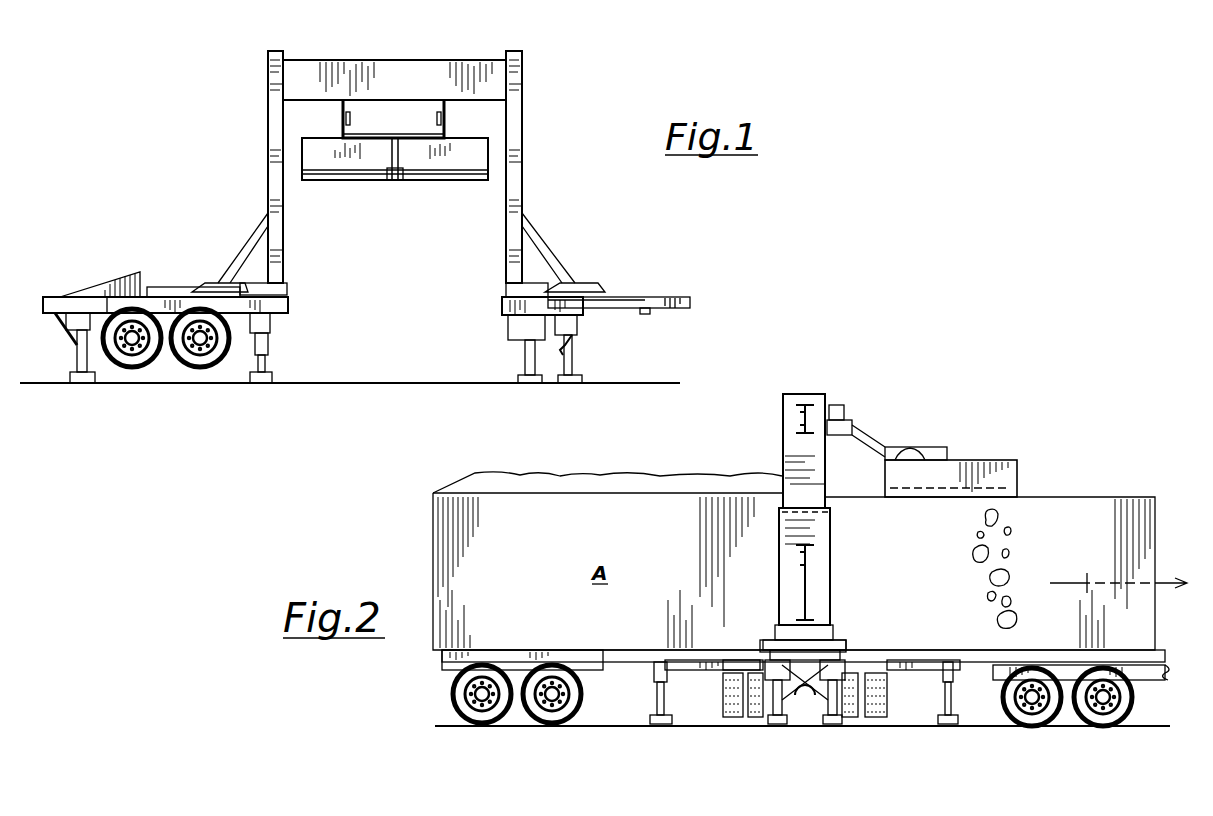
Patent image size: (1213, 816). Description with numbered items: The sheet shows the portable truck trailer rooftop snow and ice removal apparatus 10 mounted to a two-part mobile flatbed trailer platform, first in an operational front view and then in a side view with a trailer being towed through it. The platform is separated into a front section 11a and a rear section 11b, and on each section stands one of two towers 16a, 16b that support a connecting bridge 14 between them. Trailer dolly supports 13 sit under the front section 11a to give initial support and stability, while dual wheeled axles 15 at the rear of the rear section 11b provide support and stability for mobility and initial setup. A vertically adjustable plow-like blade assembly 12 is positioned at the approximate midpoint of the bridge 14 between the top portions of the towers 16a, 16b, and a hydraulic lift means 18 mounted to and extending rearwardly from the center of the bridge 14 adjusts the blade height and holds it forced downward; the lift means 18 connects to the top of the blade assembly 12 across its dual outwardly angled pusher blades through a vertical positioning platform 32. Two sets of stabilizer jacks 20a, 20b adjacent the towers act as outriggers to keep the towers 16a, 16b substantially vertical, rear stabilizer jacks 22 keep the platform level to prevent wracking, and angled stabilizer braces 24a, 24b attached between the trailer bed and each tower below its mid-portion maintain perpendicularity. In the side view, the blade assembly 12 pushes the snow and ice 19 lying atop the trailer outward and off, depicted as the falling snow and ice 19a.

In FIG. 1, the portable truck trailer rooftop snow and ice removal apparatus 10 is at (555, 52).
In FIG. 1, the front section of trailer platform 11a is at (657, 297).
In FIG. 2, the front section of trailer platform 11a is at (838, 645).
In FIG. 1, the rear section of trailer platform 11b is at (168, 290).
In FIG. 1, the blade assembly 12 is at (375, 163).
In FIG. 2, the blade assembly 12 is at (1022, 442).
In FIG. 1, the trailer dolly supports 13 is at (590, 350).
In FIG. 2, the trailer dolly supports 13 is at (830, 715).
In FIG. 1, the connecting bridge 14 is at (392, 62).
In FIG. 1, the dual wheeled axles 15 is at (198, 362).
In FIG. 2, the dual wheeled axles 15 is at (735, 717).
In FIG. 1, the tower 16a is at (523, 156).
In FIG. 2, the tower 16a is at (832, 530).
In FIG. 1, the tower 16b is at (270, 130).
In FIG. 1, the hydraulic lift means 18 is at (446, 120).
In FIG. 2, the hydraulic lift means 18 is at (850, 430).
In FIG. 2, the snow and ice 19 is at (585, 485).
In FIG. 2, the falling snow and ice 19a is at (990, 597).
In FIG. 1, the stabilizer jacks 20a is at (525, 355).
In FIG. 2, the stabilizer jacks 20a is at (656, 690).
In FIG. 1, the stabilizer jacks 20b is at (272, 345).
In FIG. 2, the stabilizer jacks 20b is at (952, 700).
In FIG. 1, the rear stabilizer jacks 22 is at (60, 343).
In FIG. 1, the stabilizer brace 24a is at (545, 250).
In FIG. 2, the stabilizer brace 24a is at (832, 577).
In FIG. 1, the stabilizer brace 24b is at (230, 270).
In FIG. 2, the vertical positioning platform 32 is at (915, 445).